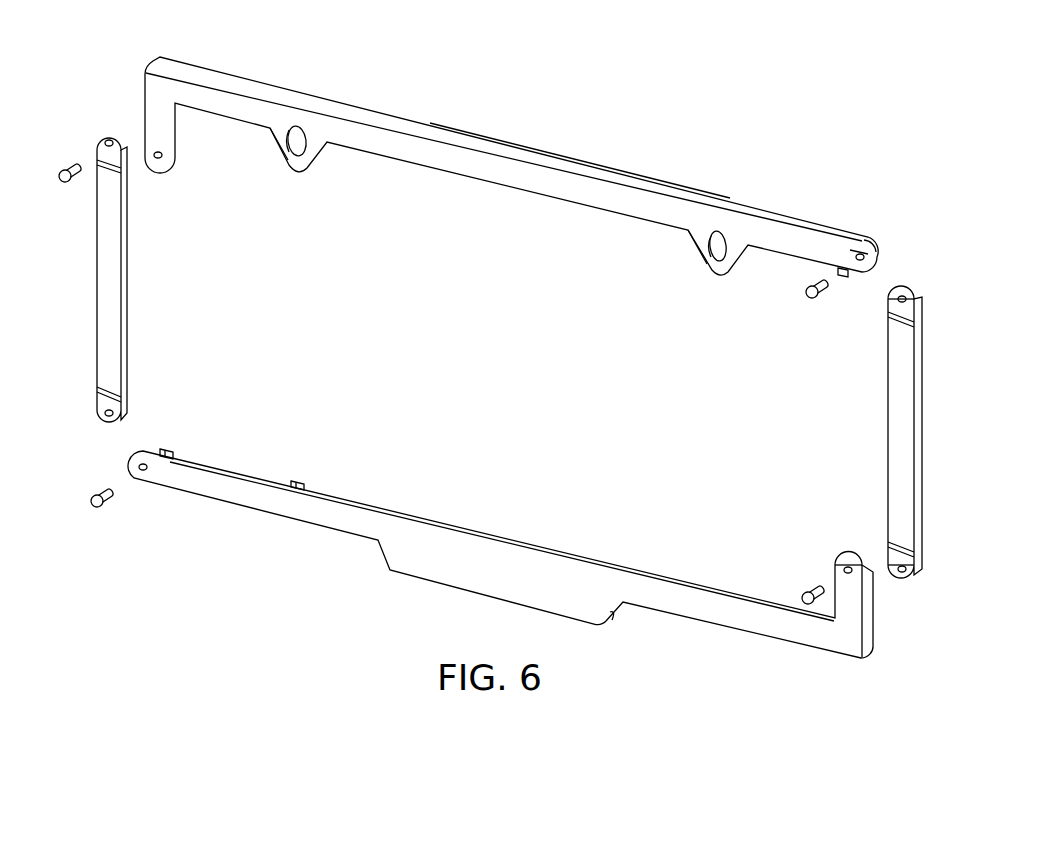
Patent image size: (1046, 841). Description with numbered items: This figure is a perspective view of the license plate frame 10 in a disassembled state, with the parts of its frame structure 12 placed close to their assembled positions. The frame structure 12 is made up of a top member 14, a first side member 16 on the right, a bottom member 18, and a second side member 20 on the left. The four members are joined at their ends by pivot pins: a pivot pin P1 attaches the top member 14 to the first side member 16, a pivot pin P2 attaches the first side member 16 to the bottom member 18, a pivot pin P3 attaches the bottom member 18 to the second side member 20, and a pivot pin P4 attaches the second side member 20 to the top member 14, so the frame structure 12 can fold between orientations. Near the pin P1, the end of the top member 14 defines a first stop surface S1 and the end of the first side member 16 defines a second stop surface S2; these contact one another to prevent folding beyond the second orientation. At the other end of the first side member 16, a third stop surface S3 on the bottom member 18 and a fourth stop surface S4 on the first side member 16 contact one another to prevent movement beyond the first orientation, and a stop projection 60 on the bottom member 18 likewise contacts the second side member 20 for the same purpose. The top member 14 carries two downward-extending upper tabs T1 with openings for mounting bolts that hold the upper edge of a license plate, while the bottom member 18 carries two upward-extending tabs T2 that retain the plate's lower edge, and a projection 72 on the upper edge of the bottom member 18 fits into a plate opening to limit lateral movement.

The license plate frame 10 is at (678, 122).
The frame structure 12 is at (385, 110).
The top member 14 is at (512, 158).
The first side member 16 is at (902, 432).
The bottom member 18 is at (338, 513).
The second side member 20 is at (108, 283).
The stop projection 60 is at (167, 448).
The projection 72 is at (842, 278).
The upper tabs T1 is at (290, 158).
The tabs T2 is at (708, 258).
The first stop surface S1 is at (869, 239).
The second stop surface S2 is at (918, 297).
The third stop surface S3 is at (868, 569).
The fourth stop surface S4 is at (920, 572).
The pivot pin P1 is at (808, 296).
The pivot pin P2 is at (801, 598).
The pivot pin P3 is at (93, 508).
The pivot pin P4 is at (70, 166).